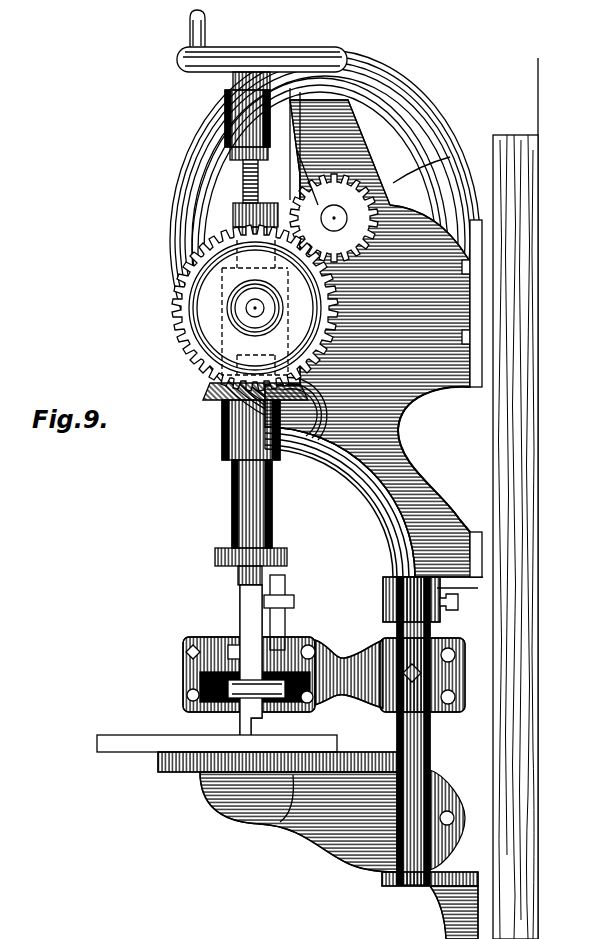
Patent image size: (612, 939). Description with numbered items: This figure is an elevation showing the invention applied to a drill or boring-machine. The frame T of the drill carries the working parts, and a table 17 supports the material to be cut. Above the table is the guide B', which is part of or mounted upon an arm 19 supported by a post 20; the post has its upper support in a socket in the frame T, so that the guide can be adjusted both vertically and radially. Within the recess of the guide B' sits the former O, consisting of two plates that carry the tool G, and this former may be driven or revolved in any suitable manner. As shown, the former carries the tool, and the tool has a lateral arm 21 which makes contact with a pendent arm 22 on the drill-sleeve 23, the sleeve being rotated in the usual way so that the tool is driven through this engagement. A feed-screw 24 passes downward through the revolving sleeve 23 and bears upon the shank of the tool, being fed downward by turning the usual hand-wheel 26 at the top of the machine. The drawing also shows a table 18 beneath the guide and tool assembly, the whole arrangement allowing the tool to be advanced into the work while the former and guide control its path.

The hand-wheel 26 is at (260, 56).
The feed-screw 24 is at (244, 192).
The drill-sleeve 23 is at (277, 507).
The pendent arm 22 is at (284, 578).
The lateral arm 21 is at (292, 590).
The arm 19 is at (390, 675).
The post 20 is at (436, 722).
The table 18 is at (125, 748).
The table 17 is at (326, 848).
The frame T is at (410, 402).
The guide B' is at (231, 661).
The tool G is at (247, 724).
The former O is at (276, 703).